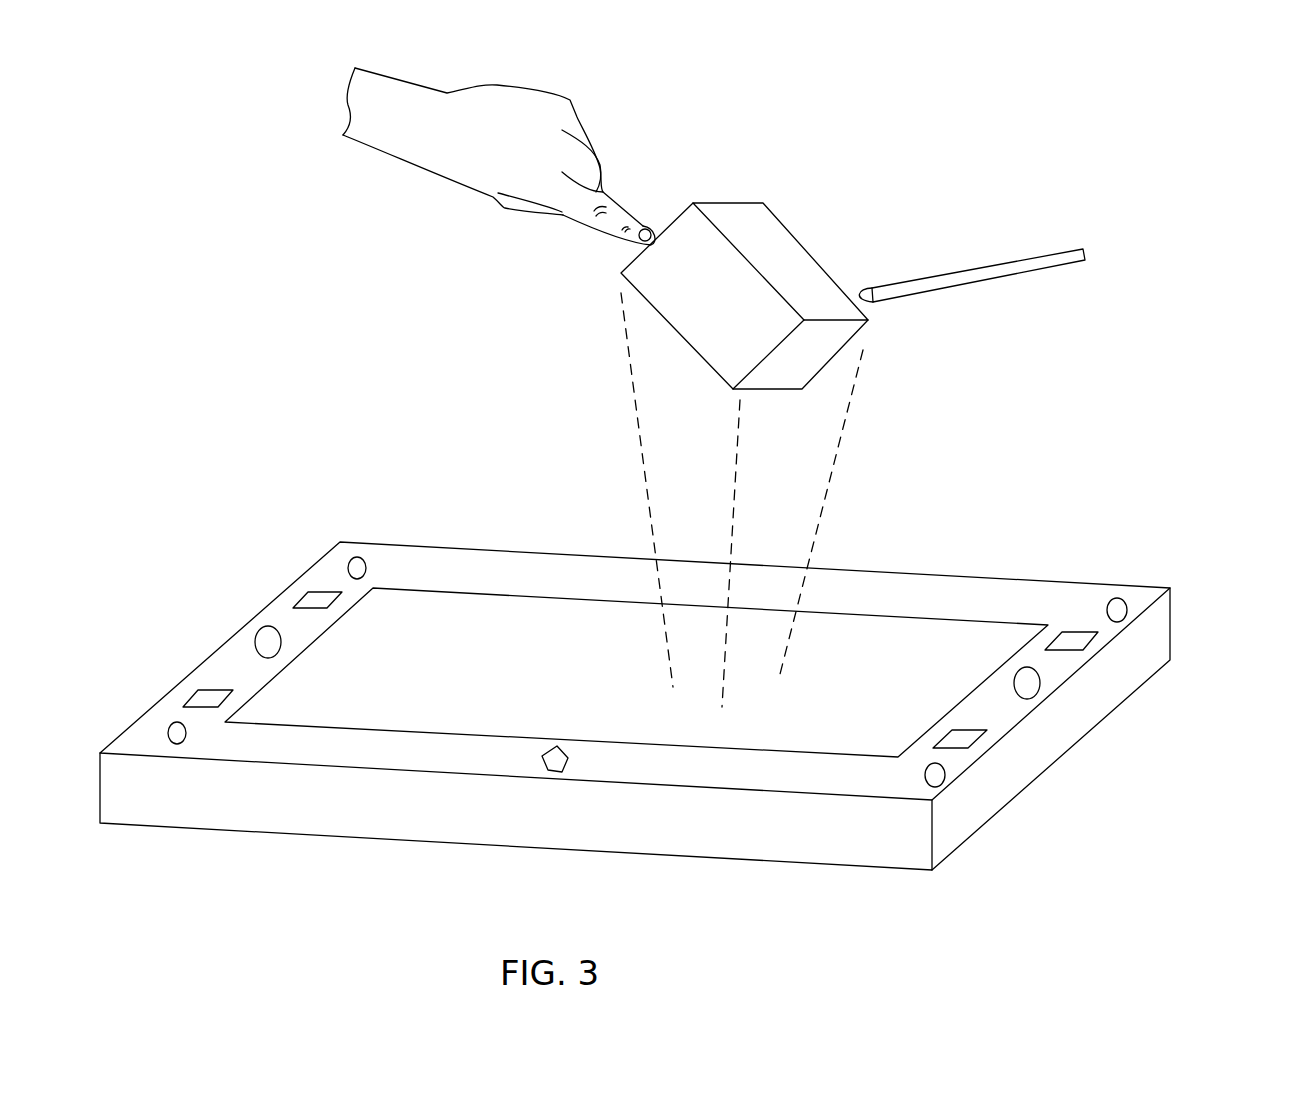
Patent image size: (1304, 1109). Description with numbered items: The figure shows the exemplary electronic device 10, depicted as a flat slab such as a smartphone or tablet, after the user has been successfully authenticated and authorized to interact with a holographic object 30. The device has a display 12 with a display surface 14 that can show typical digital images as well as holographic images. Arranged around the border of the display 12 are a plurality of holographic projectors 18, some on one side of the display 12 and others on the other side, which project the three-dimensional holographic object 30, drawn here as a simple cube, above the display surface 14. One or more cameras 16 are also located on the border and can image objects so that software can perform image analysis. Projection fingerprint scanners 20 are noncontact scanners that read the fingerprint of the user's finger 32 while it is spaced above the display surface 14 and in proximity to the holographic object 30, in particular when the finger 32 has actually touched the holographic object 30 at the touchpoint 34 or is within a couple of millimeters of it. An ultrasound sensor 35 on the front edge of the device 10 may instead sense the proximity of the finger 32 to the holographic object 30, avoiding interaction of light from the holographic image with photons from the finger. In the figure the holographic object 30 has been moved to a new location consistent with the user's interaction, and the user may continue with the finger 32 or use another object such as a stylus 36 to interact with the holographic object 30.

The electronic device 10 is at (160, 559).
The display 12 is at (940, 658).
The display surface 14 is at (525, 623).
The camera 16 is at (257, 642).
The holographic projector 18 is at (1213, 690).
The projection fingerprint scanner 20 is at (307, 600).
The holographic object 30 is at (787, 232).
The user's finger 32 is at (593, 228).
The touchpoint 34 is at (653, 240).
The ultrasound sensor 35 is at (552, 772).
The stylus 36 is at (1007, 265).